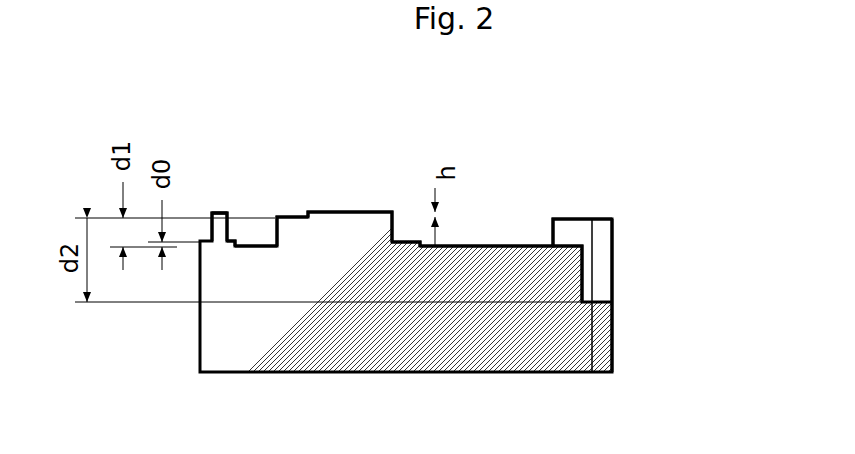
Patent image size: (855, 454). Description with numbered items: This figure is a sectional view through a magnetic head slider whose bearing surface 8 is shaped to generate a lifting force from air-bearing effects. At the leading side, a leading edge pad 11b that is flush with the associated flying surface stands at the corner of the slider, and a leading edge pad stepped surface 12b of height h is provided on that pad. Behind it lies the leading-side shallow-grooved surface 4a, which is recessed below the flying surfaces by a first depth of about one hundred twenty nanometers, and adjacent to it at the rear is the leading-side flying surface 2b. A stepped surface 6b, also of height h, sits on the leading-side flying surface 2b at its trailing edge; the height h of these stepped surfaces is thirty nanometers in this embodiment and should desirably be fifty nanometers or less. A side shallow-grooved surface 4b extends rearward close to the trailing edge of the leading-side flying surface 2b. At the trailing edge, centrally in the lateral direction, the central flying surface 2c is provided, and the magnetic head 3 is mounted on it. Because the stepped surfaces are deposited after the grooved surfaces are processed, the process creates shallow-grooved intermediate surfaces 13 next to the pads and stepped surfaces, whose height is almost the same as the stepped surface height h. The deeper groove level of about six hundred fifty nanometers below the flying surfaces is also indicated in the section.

The leading edge pad 11b is at (210, 213).
The leading edge pad stepped surface 12b is at (220, 213).
The shallow-grooved intermediate surface 13 is at (234, 241).
The leading-side shallow-grooved surface 4a is at (258, 245).
The leading-side flying surface 2b is at (293, 217).
The stepped surface 6b is at (342, 211).
The side shallow-grooved surface 4b is at (492, 246).
The bearing surface 8 is at (565, 218).
The central flying surface 2c is at (577, 218).
The magnetic head 3 is at (598, 218).